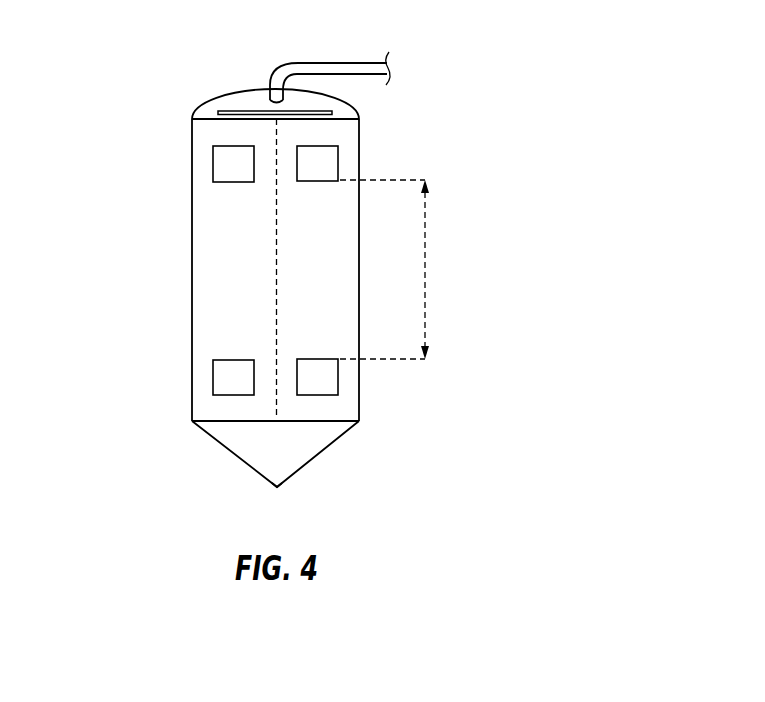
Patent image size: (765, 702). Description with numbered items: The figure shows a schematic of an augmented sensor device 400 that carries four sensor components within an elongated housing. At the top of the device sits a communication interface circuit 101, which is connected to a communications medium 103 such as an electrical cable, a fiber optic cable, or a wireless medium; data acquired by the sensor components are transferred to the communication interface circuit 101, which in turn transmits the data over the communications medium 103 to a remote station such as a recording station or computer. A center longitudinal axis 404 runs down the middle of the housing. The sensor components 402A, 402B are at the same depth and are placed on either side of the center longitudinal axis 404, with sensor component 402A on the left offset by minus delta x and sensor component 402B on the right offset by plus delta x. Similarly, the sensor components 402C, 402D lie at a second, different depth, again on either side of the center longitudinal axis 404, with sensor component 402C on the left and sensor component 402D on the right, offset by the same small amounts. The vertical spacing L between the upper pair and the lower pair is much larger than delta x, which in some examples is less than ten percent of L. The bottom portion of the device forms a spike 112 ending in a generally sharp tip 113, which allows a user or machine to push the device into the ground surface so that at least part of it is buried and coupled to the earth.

The augmented sensor device 400 is at (375, 130).
The communication interface circuit 101 is at (217, 111).
The communications medium 103 is at (298, 62).
The center longitudinal axis 404 is at (275, 278).
The sensor component 402A is at (213, 163).
The sensor component 402B is at (339, 170).
The sensor component 402C is at (213, 377).
The sensor component 402D is at (338, 377).
The vertical spacing L is at (425, 267).
The spike 112 is at (229, 450).
The sharp tip 113 is at (277, 487).